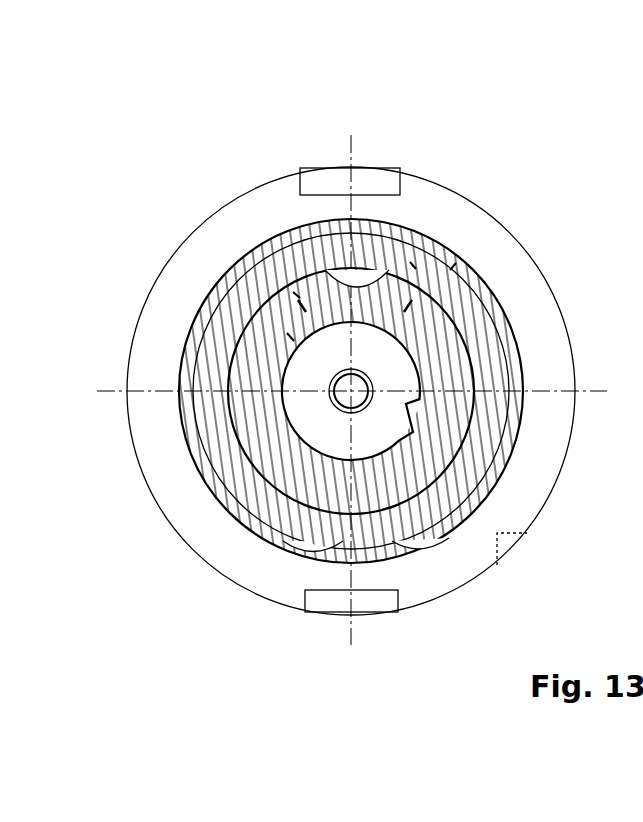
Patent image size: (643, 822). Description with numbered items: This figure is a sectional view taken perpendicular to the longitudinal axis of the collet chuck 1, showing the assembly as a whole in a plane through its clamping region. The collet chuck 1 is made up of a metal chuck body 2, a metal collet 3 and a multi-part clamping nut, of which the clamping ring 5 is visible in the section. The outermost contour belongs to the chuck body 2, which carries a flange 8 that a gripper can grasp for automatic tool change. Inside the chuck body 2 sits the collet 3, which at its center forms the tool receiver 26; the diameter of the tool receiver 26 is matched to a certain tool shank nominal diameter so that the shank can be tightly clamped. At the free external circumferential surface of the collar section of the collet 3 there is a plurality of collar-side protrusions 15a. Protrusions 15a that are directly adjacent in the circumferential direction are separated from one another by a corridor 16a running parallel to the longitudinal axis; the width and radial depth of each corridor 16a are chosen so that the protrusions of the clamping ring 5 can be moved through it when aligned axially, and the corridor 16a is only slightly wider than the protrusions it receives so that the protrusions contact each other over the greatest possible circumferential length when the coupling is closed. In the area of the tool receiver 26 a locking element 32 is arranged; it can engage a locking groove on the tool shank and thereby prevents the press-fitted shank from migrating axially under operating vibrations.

The collet chuck 1 is at (101, 342).
The chuck body 2 is at (288, 604).
The collet 3 is at (270, 438).
The clamping ring 5 is at (181, 400).
The flange 8 is at (426, 605).
The collar-side protrusions 15a is at (287, 333).
The corridor 16a is at (296, 292).
The tool receiver 26 is at (290, 355).
The locking element 32 is at (430, 496).